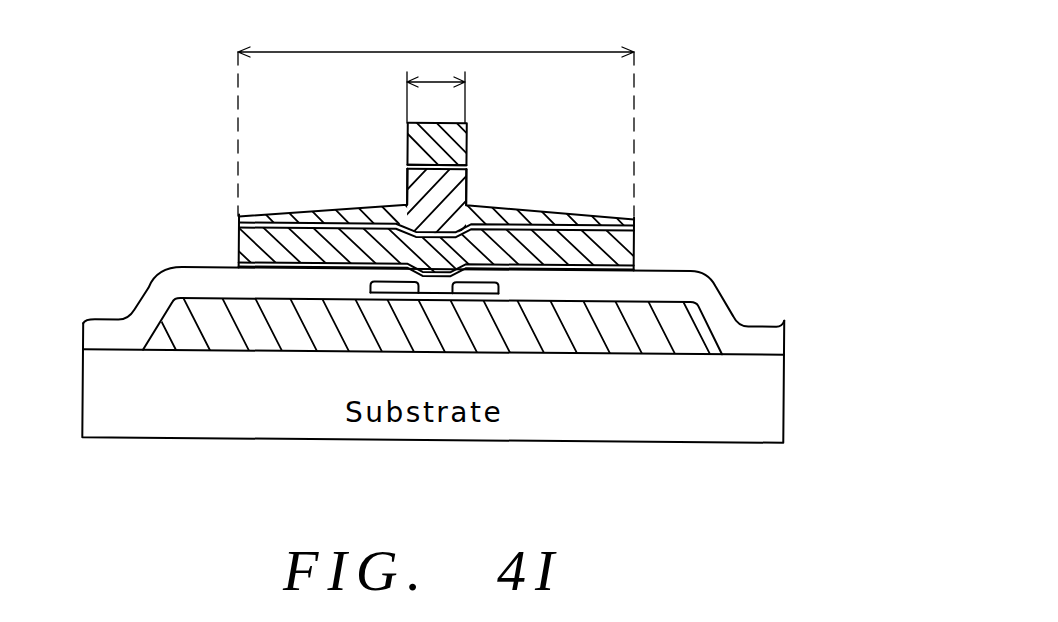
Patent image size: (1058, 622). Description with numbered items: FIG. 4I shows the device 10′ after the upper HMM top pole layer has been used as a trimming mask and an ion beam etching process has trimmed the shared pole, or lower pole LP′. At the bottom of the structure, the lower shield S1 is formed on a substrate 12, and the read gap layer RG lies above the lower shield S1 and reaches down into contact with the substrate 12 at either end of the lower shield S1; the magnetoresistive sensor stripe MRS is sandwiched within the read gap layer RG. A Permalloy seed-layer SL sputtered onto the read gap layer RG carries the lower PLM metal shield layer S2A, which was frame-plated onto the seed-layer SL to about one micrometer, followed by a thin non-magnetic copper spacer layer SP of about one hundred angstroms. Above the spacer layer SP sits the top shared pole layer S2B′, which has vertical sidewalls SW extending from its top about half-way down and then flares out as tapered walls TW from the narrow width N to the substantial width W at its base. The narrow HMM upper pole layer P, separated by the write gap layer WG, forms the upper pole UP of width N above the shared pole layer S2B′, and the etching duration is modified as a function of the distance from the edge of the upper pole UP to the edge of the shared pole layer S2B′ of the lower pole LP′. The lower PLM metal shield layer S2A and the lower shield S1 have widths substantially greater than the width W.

The width W is at (436, 119).
The narrow width N is at (436, 86).
The upper pole UP is at (591, 136).
The HMM upper pole layer P is at (450, 135).
The write gap layer WG is at (406, 167).
The vertical sidewalls SW is at (406, 180).
The tapered walls TW is at (337, 211).
The top shared pole layer S2B′ is at (493, 200).
The lower pole LP′ is at (522, 221).
The spacer layer SP is at (238, 226).
The seed-layer SL is at (238, 264).
The lower PLM metal shield layer S2A is at (634, 264).
The read gap layer RG is at (96, 331).
The substrate 12 is at (107, 402).
The device 10′ is at (450, 279).
The lower shield S1 is at (240, 327).
The magnetoresistive sensor stripe MRS is at (383, 288).